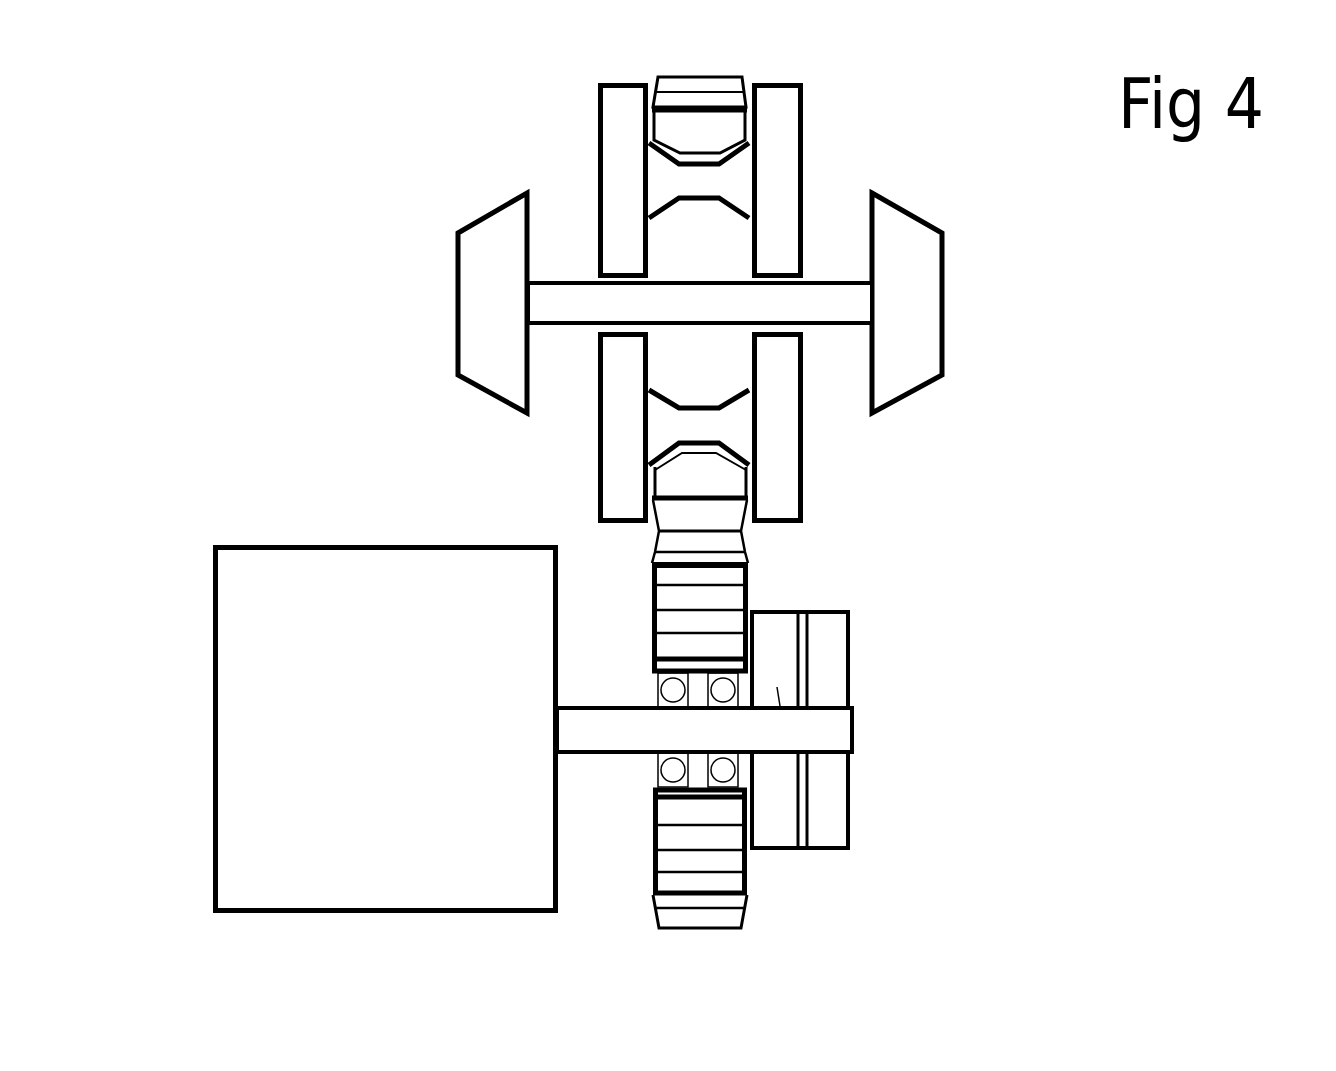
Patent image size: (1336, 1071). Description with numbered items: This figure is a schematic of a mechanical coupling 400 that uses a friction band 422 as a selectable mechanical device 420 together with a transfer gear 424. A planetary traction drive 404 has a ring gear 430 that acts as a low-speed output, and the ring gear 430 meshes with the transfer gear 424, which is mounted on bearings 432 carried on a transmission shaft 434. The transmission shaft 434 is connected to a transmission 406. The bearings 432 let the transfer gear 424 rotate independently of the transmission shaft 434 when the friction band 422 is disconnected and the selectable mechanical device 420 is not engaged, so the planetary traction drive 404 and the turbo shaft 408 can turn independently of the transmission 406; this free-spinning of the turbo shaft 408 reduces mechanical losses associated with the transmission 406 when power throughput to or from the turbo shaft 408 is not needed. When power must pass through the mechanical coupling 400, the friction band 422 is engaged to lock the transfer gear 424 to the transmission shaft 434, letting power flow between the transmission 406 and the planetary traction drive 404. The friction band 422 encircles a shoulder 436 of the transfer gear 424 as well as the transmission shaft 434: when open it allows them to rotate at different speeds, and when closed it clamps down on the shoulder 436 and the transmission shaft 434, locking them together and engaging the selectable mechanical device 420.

The mechanical coupling 400 is at (275, 202).
The planetary traction drive 404 is at (823, 385).
The transmission 406 is at (386, 729).
The turbo shaft 408 is at (565, 298).
The selectable mechanical device 420 is at (820, 592).
The friction band 422 is at (850, 613).
The transfer gear 424 is at (700, 860).
The ring gear 430 is at (692, 517).
The bearings 432 is at (725, 772).
The transmission shaft 434 is at (812, 728).
The shoulder 436 is at (777, 687).